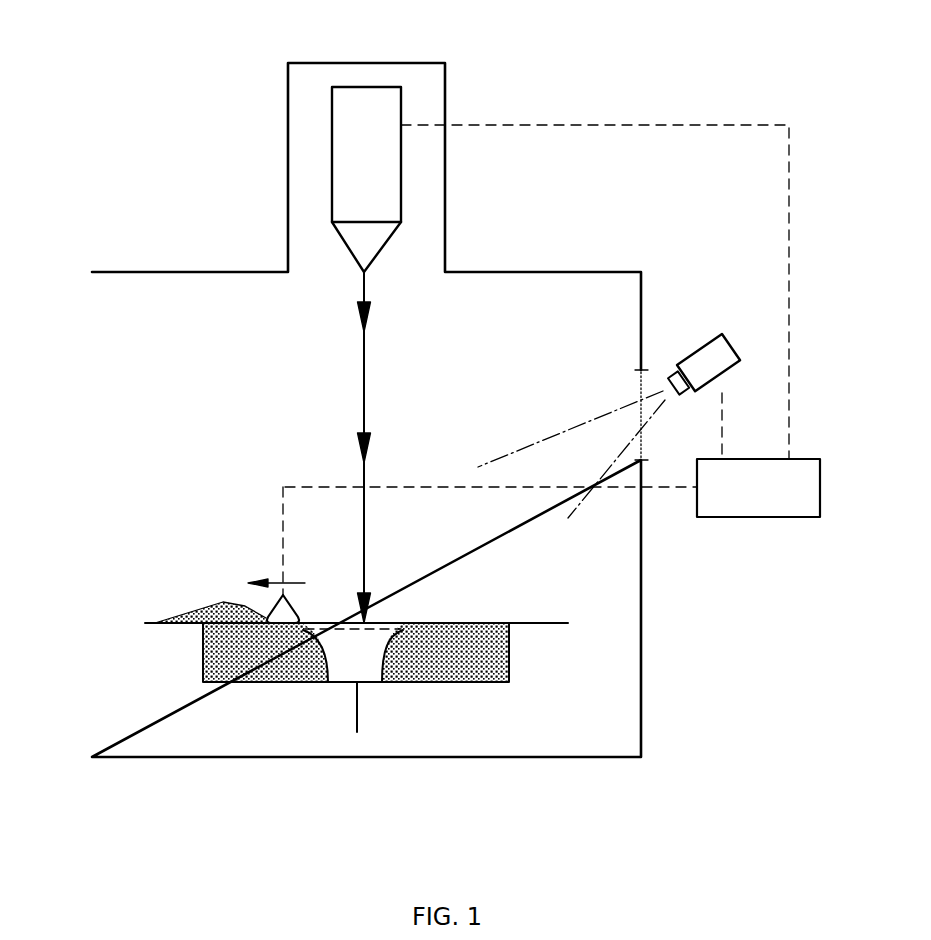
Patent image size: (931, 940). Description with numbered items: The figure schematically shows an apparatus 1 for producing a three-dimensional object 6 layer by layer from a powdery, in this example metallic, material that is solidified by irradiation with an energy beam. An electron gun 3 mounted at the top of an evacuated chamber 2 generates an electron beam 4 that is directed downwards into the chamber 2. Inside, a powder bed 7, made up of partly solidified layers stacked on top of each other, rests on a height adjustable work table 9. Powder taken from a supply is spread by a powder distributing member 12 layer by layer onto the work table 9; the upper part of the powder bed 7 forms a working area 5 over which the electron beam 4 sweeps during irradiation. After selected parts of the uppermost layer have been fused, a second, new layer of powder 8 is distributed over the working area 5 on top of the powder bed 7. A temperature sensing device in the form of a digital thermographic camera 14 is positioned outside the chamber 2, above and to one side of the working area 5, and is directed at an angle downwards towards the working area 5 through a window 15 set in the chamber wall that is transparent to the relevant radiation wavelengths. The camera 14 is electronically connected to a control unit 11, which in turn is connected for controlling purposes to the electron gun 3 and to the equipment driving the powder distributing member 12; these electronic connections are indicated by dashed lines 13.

The apparatus 1 is at (193, 85).
The chamber 2 is at (155, 380).
The electron gun 3 is at (357, 112).
The electron beam 4 is at (364, 527).
The working area 5 is at (333, 622).
The three-dimensional object 6 is at (345, 665).
The powder bed 7 is at (230, 660).
The new layer of powder 8 is at (460, 623).
The work table 9 is at (462, 683).
The control unit 11 is at (773, 498).
The powder distributing member 12 is at (265, 612).
The dashed lines 13 is at (790, 290).
The digital thermographic camera 14 is at (733, 353).
The window 15 is at (641, 382).